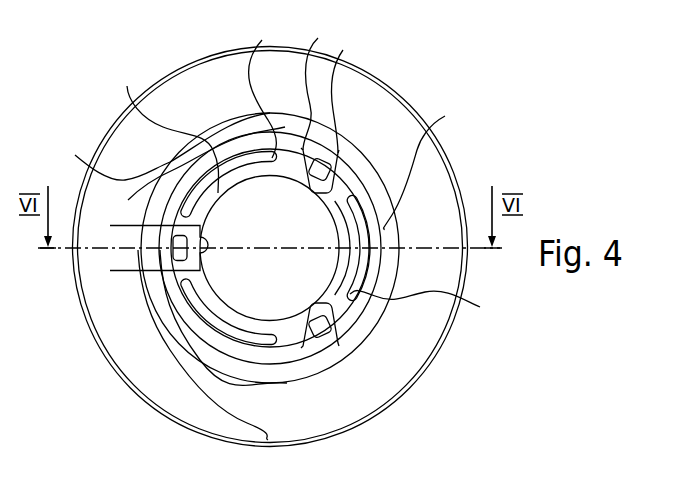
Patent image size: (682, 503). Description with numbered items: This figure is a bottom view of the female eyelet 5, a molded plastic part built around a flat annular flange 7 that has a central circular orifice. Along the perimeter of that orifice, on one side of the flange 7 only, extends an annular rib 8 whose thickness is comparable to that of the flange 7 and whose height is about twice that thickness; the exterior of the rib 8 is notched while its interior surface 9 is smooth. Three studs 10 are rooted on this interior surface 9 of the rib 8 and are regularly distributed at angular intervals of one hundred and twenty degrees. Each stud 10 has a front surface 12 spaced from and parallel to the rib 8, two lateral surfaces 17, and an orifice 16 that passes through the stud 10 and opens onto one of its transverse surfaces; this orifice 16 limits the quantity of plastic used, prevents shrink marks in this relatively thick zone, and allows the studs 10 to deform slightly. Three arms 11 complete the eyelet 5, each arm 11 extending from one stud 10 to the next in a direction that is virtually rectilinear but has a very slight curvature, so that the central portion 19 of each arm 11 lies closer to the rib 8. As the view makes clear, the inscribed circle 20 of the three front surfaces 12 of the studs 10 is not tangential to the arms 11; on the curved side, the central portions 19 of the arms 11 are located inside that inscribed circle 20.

The female eyelet 5 is at (494, 162).
The flat annular flange 7 is at (180, 87).
The annular rib 8 is at (422, 164).
The interior surface 9 is at (166, 127).
The stud 10 is at (413, 407).
The arm 11 is at (145, 430).
The front surface 12 is at (334, 166).
The orifice 16 is at (351, 91).
The lateral surface 17 is at (128, 200).
The central portion 19 is at (462, 154).
The inscribed circle 20 is at (347, 260).